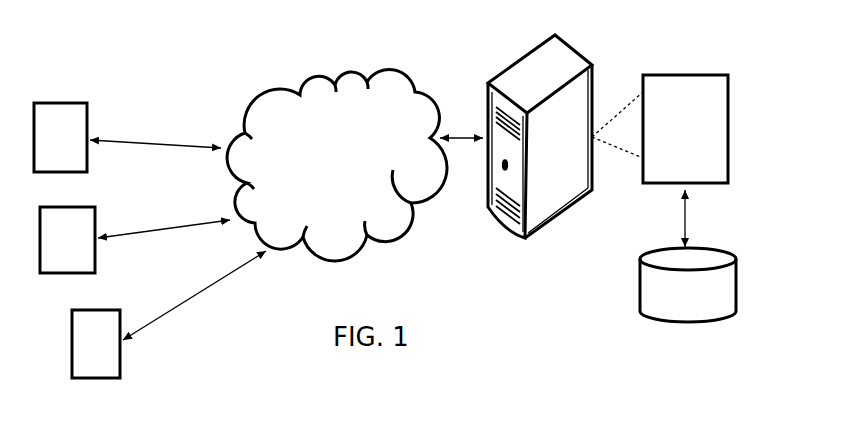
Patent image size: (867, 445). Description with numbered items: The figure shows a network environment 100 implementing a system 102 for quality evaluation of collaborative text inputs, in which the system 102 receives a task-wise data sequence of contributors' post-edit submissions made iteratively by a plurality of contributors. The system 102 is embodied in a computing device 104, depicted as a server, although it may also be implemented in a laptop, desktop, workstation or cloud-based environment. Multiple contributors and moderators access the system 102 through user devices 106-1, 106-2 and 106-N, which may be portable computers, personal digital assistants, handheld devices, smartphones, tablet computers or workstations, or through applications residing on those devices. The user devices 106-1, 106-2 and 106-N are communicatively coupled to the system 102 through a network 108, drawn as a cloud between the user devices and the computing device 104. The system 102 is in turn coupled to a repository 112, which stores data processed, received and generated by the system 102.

The network environment 100 is at (443, 287).
The system 102 is at (668, 75).
The computing device 104 is at (565, 43).
The user device 106-N is at (88, 120).
The user device 106-1 is at (98, 220).
The user device 106-2 is at (93, 310).
The network 108 is at (342, 171).
The repository 112 is at (640, 283).